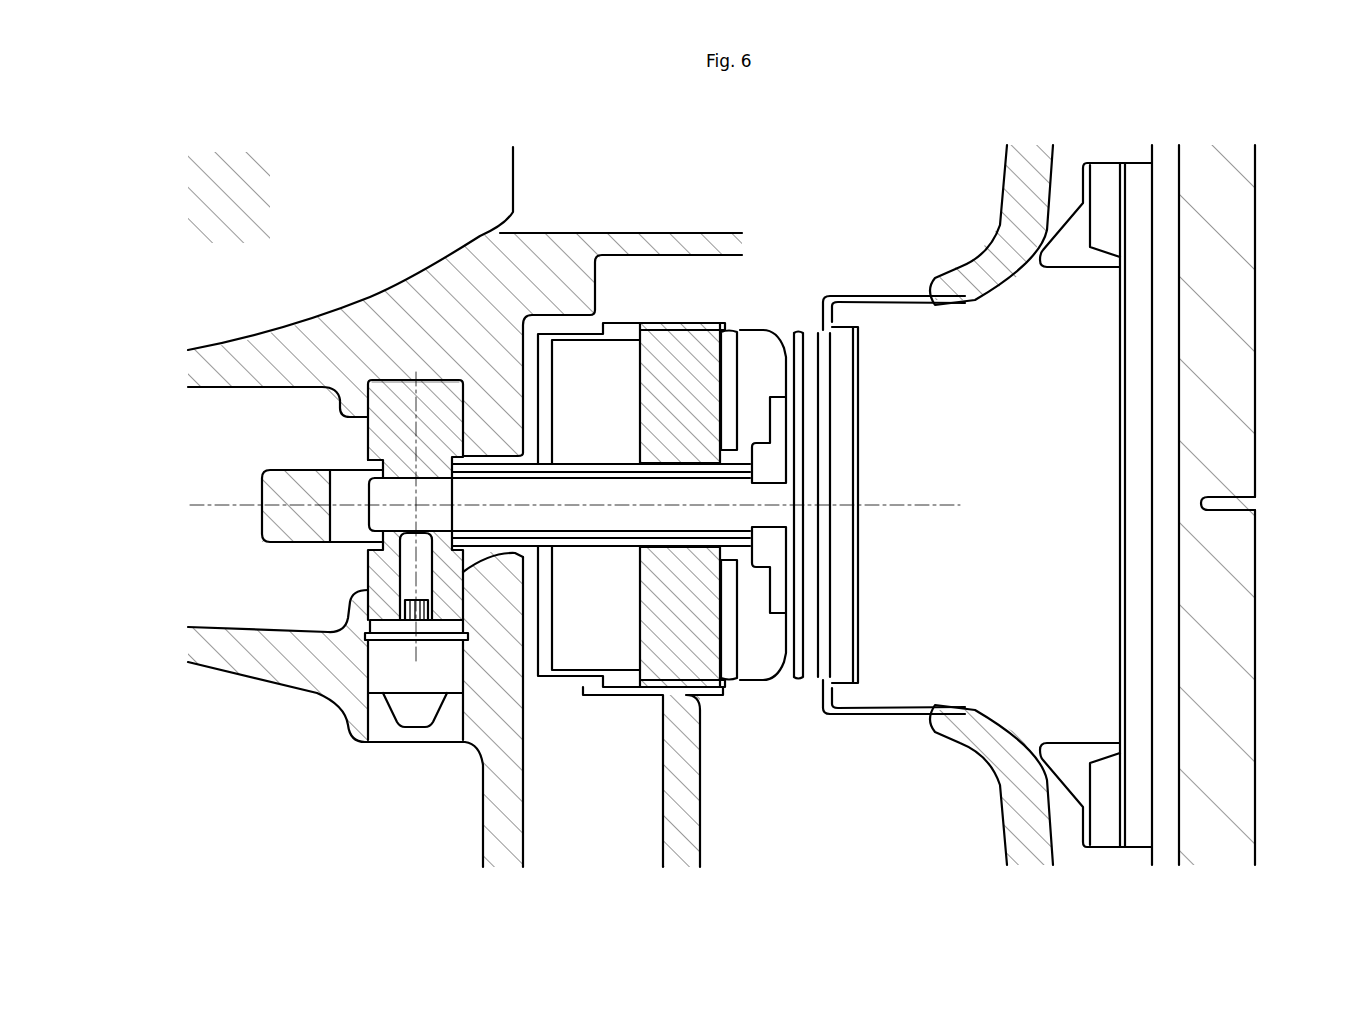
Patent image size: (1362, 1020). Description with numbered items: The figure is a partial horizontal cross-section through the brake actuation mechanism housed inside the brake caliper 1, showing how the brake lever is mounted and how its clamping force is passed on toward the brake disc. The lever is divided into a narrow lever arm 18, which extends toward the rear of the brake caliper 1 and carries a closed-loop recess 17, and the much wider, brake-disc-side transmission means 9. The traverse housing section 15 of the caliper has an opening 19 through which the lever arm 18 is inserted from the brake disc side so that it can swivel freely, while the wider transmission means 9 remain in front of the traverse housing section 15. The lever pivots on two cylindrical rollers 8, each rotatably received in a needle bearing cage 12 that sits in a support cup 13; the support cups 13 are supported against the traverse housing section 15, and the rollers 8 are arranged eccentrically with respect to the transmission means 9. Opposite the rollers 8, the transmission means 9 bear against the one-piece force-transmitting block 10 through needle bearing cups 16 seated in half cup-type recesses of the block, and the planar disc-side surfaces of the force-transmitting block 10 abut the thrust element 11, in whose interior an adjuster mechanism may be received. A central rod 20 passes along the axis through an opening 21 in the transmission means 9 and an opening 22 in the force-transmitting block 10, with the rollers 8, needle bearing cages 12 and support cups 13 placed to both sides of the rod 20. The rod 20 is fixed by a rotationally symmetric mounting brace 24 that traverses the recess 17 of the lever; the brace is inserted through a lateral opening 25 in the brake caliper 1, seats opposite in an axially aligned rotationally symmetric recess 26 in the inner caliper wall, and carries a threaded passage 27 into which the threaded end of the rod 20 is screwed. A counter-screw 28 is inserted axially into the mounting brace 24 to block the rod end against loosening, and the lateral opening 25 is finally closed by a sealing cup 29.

The brake caliper 1 is at (307, 350).
The cylindrical rollers 8 is at (592, 640).
The transmission means 9 is at (730, 663).
The force-transmitting block 10 is at (757, 367).
The thrust element 11 is at (1060, 423).
The needle bearing cages 12 is at (548, 400).
The support cups 13 is at (540, 390).
The traverse housing section 15 is at (507, 817).
The needle bearing cups 16 is at (695, 658).
The recess 17 is at (350, 520).
The lever arm 18 is at (283, 520).
The opening 19 is at (481, 457).
The central rod 20 is at (645, 503).
The opening 21 is at (737, 470).
The opening 22 is at (777, 467).
The mounting brace 24 is at (397, 420).
The lateral opening 25 is at (392, 733).
The rotationally symmetric recess 26 is at (447, 370).
The threaded passage 27 is at (412, 488).
The counter-screw 28 is at (403, 560).
The sealing cup 29 is at (387, 667).